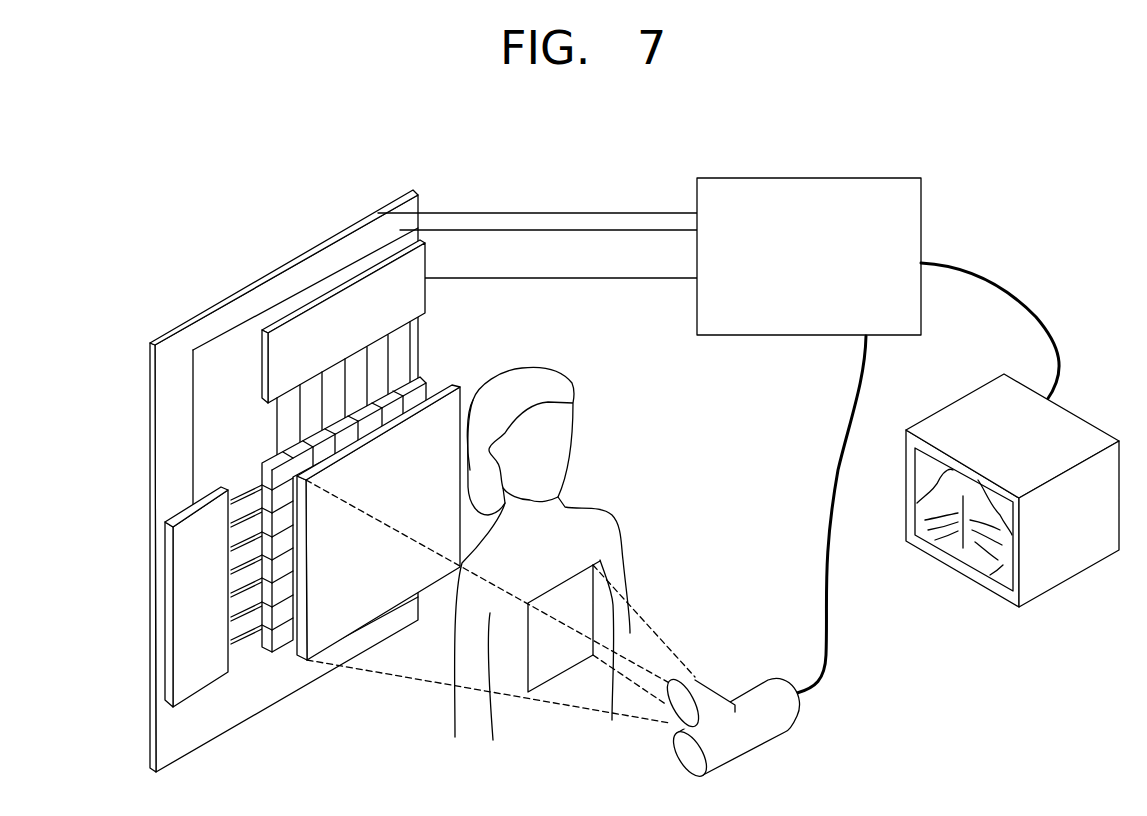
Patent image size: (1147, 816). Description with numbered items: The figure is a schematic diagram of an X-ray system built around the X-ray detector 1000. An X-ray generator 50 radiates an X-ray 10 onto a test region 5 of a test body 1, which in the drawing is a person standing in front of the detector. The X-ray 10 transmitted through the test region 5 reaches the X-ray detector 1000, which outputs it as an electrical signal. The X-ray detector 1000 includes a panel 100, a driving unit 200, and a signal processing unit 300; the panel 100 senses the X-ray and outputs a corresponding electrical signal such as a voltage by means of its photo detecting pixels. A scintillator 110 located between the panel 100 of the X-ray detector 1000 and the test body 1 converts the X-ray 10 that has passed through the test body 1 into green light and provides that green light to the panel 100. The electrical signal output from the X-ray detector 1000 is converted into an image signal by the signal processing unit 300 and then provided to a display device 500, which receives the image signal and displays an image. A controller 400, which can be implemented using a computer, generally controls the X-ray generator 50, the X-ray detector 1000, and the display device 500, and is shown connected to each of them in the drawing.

The test body 1 is at (605, 509).
The test region 5 is at (573, 562).
The X-ray 10 is at (658, 631).
The X-ray generator 50 is at (752, 742).
The panel 100 is at (420, 392).
The scintillator 110 is at (358, 612).
The driving unit 200 is at (183, 620).
The signal processing unit 300 is at (325, 313).
The controller 400 is at (823, 177).
The display device 500 is at (1078, 574).
The X-ray detector 1000 is at (247, 257).